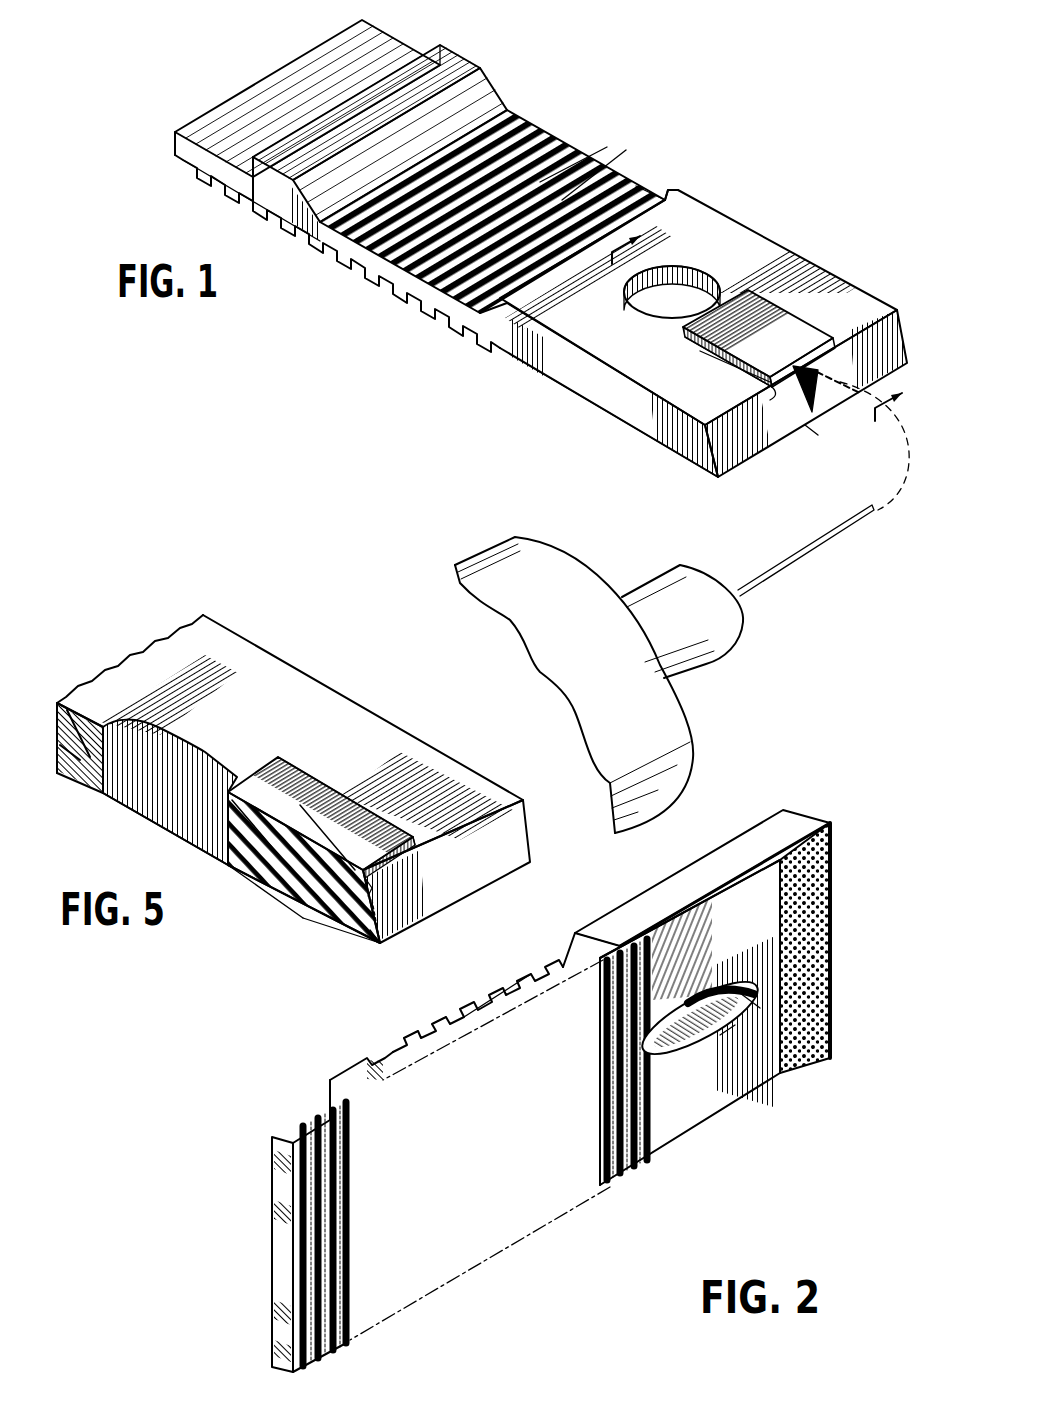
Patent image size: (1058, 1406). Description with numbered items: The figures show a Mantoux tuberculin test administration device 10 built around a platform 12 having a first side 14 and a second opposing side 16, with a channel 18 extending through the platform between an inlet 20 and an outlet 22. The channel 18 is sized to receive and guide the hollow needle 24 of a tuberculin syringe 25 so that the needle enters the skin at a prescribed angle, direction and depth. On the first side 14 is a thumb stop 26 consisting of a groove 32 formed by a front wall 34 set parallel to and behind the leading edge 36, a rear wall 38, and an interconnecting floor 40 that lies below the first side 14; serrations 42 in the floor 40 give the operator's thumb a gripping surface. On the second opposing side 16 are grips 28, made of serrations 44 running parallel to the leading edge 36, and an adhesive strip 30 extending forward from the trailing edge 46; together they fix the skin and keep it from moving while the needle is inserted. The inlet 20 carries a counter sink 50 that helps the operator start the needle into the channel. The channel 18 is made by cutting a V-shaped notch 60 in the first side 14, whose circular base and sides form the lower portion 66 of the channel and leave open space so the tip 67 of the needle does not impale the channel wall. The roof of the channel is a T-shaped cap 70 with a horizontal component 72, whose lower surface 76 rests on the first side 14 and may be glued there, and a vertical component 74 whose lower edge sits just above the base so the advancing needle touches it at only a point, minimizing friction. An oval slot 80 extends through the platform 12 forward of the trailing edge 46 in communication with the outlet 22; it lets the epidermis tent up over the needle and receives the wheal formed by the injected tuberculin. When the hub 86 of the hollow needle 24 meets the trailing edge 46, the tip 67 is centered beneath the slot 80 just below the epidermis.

In FIG. 1, the Mantoux tuberculin test administration device 10 is at (800, 52).
In FIG. 2, the Mantoux tuberculin test administration device 10 is at (777, 1228).
In FIG. 1, the platform 12 is at (748, 133).
In FIG. 5, the platform 12 is at (270, 617).
In FIG. 2, the platform 12 is at (445, 1138).
In FIG. 1, the first side 14 is at (654, 357).
In FIG. 5, the first side 14 is at (282, 722).
In FIG. 2, the first side 14 is at (723, 840).
In FIG. 1, the second opposing side 16 is at (583, 403).
In FIG. 5, the second opposing side 16 is at (400, 921).
In FIG. 2, the second opposing side 16 is at (749, 938).
In FIG. 5, the channel 18 is at (303, 920).
In FIG. 2, the channel 18 is at (755, 985).
In FIG. 1, the inlet 20 is at (815, 420).
In FIG. 5, the inlet 20 is at (378, 925).
In FIG. 2, the outlet 22 is at (722, 1040).
In FIG. 1, the hollow needle 24 is at (795, 562).
In FIG. 1, the tuberculin syringe 25 is at (690, 712).
In FIG. 1, the thumb stop 26 is at (626, 148).
In FIG. 2, the thumb stop 26 is at (570, 923).
In FIG. 1, the grips 28 is at (383, 287).
In FIG. 2, the grips 28 is at (447, 1265).
In FIG. 1, the adhesive strip 30 is at (682, 458).
In FIG. 5, the adhesive strip 30 is at (330, 928).
In FIG. 2, the adhesive strip 30 is at (817, 880).
In FIG. 1, the groove 32 is at (587, 152).
In FIG. 2, the groove 32 is at (487, 992).
In FIG. 1, the front wall 34 is at (482, 75).
In FIG. 2, the front wall 34 is at (390, 1055).
In FIG. 1, the leading edge 36 is at (320, 45).
In FIG. 2, the leading edge 36 is at (280, 1240).
In FIG. 1, the rear wall 38 is at (683, 190).
In FIG. 2, the rear wall 38 is at (575, 943).
In FIG. 1, the floor 40 is at (640, 183).
In FIG. 2, the floor 40 is at (417, 1048).
In FIG. 1, the serrations 42 is at (609, 170).
In FIG. 2, the serrations 42 is at (443, 1040).
In FIG. 1, the serrations 44 is at (473, 333).
In FIG. 2, the serrations 44 is at (635, 1172).
In FIG. 1, the trailing edge 46 is at (746, 455).
In FIG. 5, the trailing edge 46 is at (476, 836).
In FIG. 2, the trailing edge 46 is at (807, 813).
In FIG. 1, the counter sink 50 is at (820, 407).
In FIG. 5, the counter sink 50 is at (372, 918).
In FIG. 1, the V-shaped notch 60 is at (795, 382).
In FIG. 5, the V-shaped notch 60 is at (372, 890).
In FIG. 2, the lower portion 66 is at (745, 988).
In FIG. 1, the tip 67 is at (872, 512).
In FIG. 1, the T-shaped cap 70 is at (808, 308).
In FIG. 5, the T-shaped cap 70 is at (338, 770).
In FIG. 1, the horizontal component 72 is at (713, 333).
In FIG. 5, the horizontal component 72 is at (360, 812).
In FIG. 1, the vertical component 74 is at (810, 378).
In FIG. 5, the vertical component 74 is at (265, 845).
In FIG. 2, the vertical component 74 is at (696, 1022).
In FIG. 1, the lower surface 76 is at (760, 383).
In FIG. 5, the lower surface 76 is at (420, 832).
In FIG. 1, the oval slot 80 is at (668, 268).
In FIG. 5, the oval slot 80 is at (207, 717).
In FIG. 2, the oval slot 80 is at (676, 1055).
In FIG. 1, the hub 86 is at (648, 590).